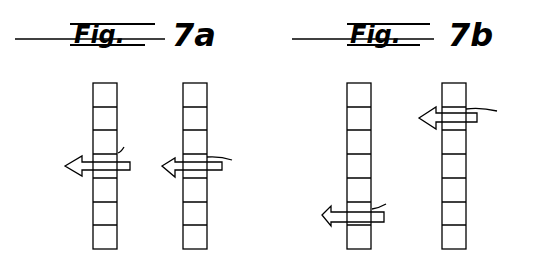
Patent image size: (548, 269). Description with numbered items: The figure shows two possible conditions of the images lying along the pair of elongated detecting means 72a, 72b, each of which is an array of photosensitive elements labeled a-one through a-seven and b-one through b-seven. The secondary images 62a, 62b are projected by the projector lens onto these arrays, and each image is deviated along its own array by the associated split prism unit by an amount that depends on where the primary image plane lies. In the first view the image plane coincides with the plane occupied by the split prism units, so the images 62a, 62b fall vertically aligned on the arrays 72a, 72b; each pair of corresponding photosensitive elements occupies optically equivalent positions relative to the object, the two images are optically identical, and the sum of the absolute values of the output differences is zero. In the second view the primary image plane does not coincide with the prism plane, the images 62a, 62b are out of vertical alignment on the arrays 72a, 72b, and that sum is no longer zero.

In FIG. 7A, the detecting means 72a is at (197, 90).
In FIG. 7B, the detecting means 72a is at (456, 90).
In FIG. 7A, the detecting means 72b is at (107, 90).
In FIG. 7B, the detecting means 72b is at (362, 90).
In FIG. 7A, the secondary image 62a is at (168, 173).
In FIG. 7B, the secondary image 62a is at (421, 125).
In FIG. 7A, the secondary image 62b is at (72, 170).
In FIG. 7B, the secondary image 62b is at (321, 214).